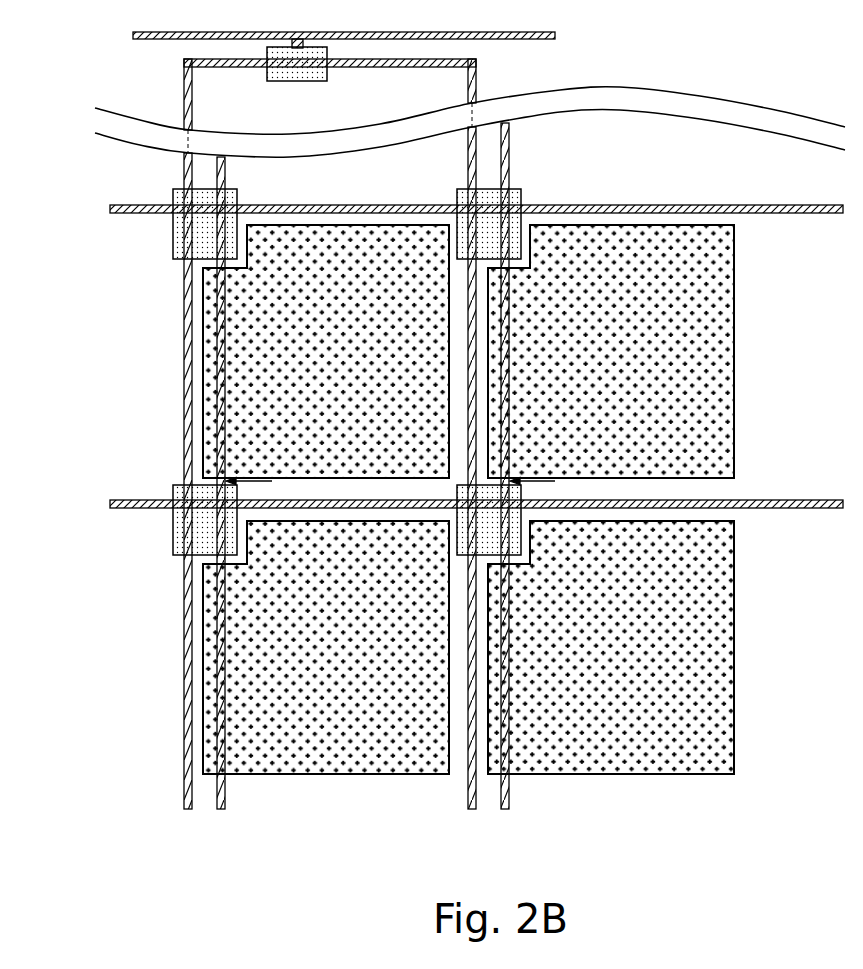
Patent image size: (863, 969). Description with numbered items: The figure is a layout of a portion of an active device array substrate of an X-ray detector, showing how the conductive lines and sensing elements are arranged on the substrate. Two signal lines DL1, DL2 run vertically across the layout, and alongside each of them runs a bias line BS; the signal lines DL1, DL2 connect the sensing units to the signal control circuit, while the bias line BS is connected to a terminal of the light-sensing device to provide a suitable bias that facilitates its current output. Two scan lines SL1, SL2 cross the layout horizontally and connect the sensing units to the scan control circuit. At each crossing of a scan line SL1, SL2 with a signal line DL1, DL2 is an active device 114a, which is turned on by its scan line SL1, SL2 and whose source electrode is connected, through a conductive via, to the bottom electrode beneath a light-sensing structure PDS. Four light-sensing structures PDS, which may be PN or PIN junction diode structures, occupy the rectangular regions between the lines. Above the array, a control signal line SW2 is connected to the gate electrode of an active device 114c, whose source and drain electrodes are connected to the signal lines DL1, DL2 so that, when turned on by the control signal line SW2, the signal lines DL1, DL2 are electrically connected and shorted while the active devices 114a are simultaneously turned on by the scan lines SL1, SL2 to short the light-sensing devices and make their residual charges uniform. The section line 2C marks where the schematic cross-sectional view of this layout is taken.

The control signal line SW2 is at (133, 35).
The active device 114c is at (297, 88).
The scan line SL1 is at (110, 209).
The scan line SL2 is at (110, 504).
The active device 114a is at (167, 482).
The signal line DL1 is at (188, 812).
The signal line DL2 is at (472, 812).
The bias line BS is at (221, 812).
The light-sensing structure PDS is at (311, 366).
The section line 2C is at (412, 479).